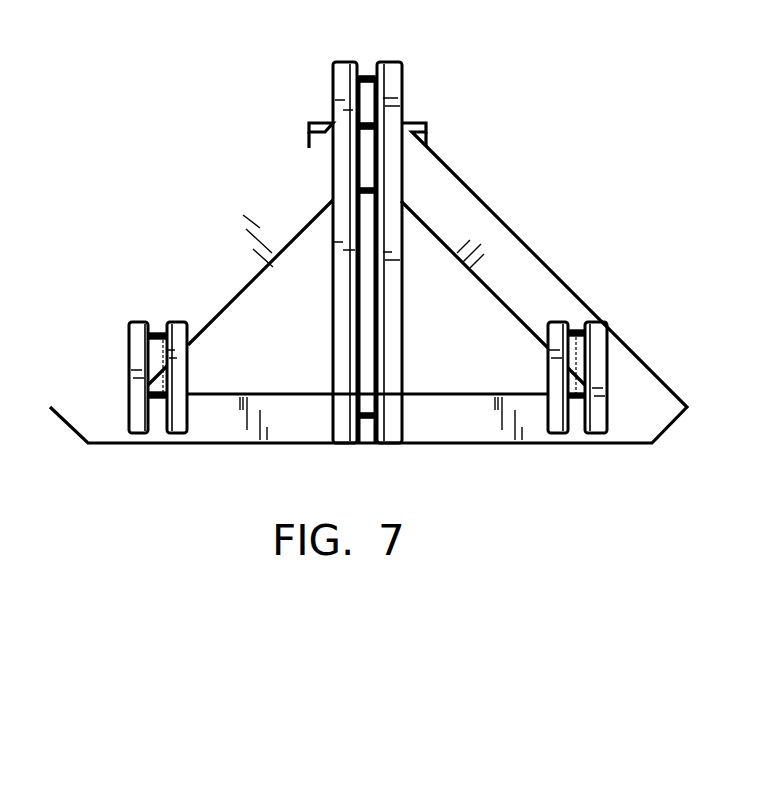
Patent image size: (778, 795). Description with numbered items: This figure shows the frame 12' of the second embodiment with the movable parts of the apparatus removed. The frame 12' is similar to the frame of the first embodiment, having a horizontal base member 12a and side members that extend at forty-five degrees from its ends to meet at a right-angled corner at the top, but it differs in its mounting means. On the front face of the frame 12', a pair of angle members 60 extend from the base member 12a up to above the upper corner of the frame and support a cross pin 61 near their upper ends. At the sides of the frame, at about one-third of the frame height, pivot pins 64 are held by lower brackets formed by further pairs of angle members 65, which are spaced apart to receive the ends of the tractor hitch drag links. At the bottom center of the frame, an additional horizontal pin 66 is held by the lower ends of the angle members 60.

The frame 12' is at (368, 308).
The base member 12a is at (475, 428).
The angle members 60 is at (395, 174).
The cross pin 61 is at (363, 73).
The pivot pins 64 is at (159, 332).
The angle members 65 is at (135, 362).
The horizontal pin 66 is at (366, 420).